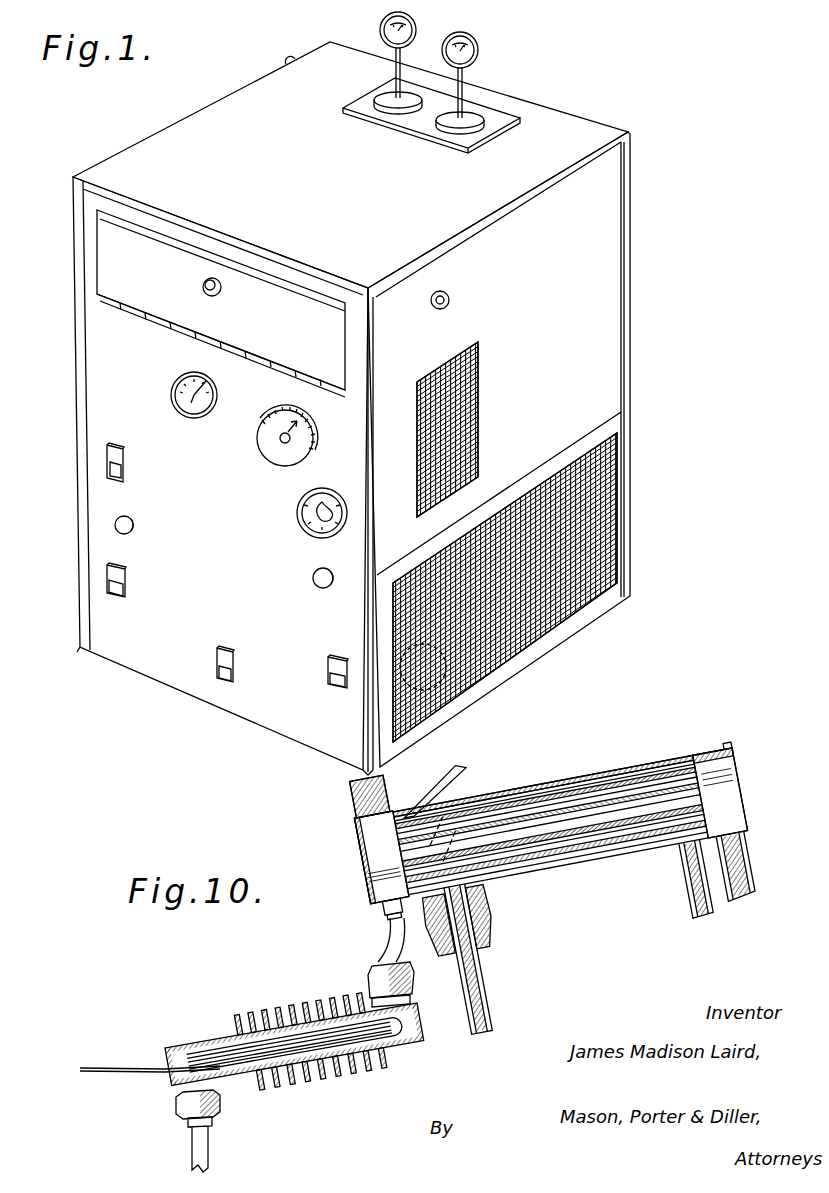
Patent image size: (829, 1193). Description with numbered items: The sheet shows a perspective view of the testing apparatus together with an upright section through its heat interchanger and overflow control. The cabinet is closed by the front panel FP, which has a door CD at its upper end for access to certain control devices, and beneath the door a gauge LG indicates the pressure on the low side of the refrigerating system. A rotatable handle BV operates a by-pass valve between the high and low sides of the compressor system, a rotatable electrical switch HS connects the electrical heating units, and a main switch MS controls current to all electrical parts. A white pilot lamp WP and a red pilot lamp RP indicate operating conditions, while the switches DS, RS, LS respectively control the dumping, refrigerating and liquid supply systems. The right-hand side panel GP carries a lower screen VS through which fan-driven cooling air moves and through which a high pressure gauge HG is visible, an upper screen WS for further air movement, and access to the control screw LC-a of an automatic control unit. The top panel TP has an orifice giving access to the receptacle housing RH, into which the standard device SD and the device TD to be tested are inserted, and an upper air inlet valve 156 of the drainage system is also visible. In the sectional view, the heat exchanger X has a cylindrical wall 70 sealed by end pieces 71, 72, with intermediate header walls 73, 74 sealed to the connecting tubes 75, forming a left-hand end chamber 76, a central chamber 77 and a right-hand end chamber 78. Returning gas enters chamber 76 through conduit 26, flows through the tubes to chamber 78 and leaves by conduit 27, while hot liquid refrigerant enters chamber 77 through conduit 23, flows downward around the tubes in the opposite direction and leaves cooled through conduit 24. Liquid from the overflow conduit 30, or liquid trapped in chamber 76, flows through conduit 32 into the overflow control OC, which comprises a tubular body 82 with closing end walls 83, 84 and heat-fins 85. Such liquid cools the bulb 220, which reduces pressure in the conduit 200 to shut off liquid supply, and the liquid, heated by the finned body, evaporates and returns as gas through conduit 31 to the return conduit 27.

In FIG. 1, the top panel TP is at (154, 150).
In FIG. 1, the upper air inlet valve 156 is at (292, 61).
In FIG. 1, the standard device SD is at (381, 28).
In FIG. 1, the device to be tested TD is at (470, 55).
In FIG. 1, the receptacle housing RH is at (500, 124).
In FIG. 1, the door CD is at (221, 303).
In FIG. 1, the front panel FP is at (96, 356).
In FIG. 1, the control screw LC-a is at (452, 301).
In FIG. 1, the right-hand side panel GP is at (612, 369).
In FIG. 1, the upper screen WS is at (478, 415).
In FIG. 1, the gauge LG is at (172, 400).
In FIG. 1, the rotatable handle BV is at (300, 411).
In FIG. 1, the main switch MS is at (106, 470).
In FIG. 1, the white pilot lamp WP is at (133, 526).
In FIG. 1, the rotatable electrical switch HS is at (304, 512).
In FIG. 1, the red pilot lamp RP is at (314, 578).
In FIG. 1, the switch DS is at (106, 590).
In FIG. 1, the switch RS is at (222, 678).
In FIG. 1, the switch LS is at (333, 688).
In FIG. 1, the lower screen VS is at (614, 520).
In FIG. 1, the high pressure gauge HG is at (460, 686).
In FIG. 10, the conduit 26 is at (357, 797).
In FIG. 10, the left-hand end chamber 76 is at (366, 838).
In FIG. 10, the end piece 72 is at (368, 867).
In FIG. 10, the intermediate header wall 74 is at (412, 812).
In FIG. 10, the connecting tubes 75 is at (507, 858).
In FIG. 10, the heat exchanger X is at (568, 767).
In FIG. 10, the cylindrical wall 70 is at (602, 778).
In FIG. 10, the right-hand end chamber 78 is at (736, 753).
In FIG. 10, the intermediate header wall 73 is at (710, 800).
In FIG. 10, the end piece 71 is at (747, 806).
In FIG. 10, the conduit 27 is at (742, 870).
In FIG. 10, the conduit 23 is at (676, 897).
In FIG. 10, the central chamber 77 is at (566, 866).
In FIG. 10, the conduit 30 is at (386, 912).
In FIG. 10, the conduit 32 is at (388, 940).
In FIG. 10, the conduit 24 is at (490, 985).
In FIG. 10, the closing end wall 83 is at (425, 1030).
In FIG. 10, the tubular body 82 is at (416, 1046).
In FIG. 10, the bulb 220 is at (386, 1062).
In FIG. 10, the overflow control chamber OC is at (265, 999).
In FIG. 10, the closing end wall 84 is at (162, 1053).
In FIG. 10, the conduit 200 is at (102, 1074).
In FIG. 10, the heat-fins 85 is at (297, 1091).
In FIG. 10, the conduit 31 is at (205, 1149).